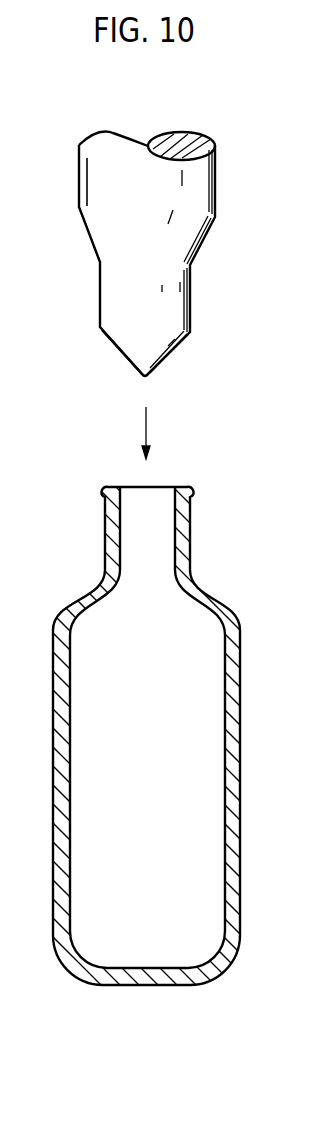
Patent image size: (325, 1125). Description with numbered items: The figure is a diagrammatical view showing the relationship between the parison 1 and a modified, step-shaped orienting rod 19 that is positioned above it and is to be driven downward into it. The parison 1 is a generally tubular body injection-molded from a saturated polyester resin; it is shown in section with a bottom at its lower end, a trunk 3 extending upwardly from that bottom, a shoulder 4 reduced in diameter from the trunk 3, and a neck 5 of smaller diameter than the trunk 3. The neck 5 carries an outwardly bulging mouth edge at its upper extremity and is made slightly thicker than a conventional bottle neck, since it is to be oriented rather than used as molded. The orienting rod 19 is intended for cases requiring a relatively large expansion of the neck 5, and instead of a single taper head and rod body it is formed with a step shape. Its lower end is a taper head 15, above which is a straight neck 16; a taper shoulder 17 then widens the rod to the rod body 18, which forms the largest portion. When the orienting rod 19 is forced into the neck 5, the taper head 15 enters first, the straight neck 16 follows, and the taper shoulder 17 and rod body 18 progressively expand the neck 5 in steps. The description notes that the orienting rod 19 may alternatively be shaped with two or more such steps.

The parison 1 is at (162, 740).
The trunk 3 is at (55, 702).
The shoulder 4 is at (216, 587).
The neck 5 is at (112, 522).
The taper head 15 is at (121, 361).
The straight neck 16 is at (196, 309).
The taper shoulder 17 is at (94, 250).
The rod body 18 is at (87, 177).
The orienting rod 19 is at (220, 186).